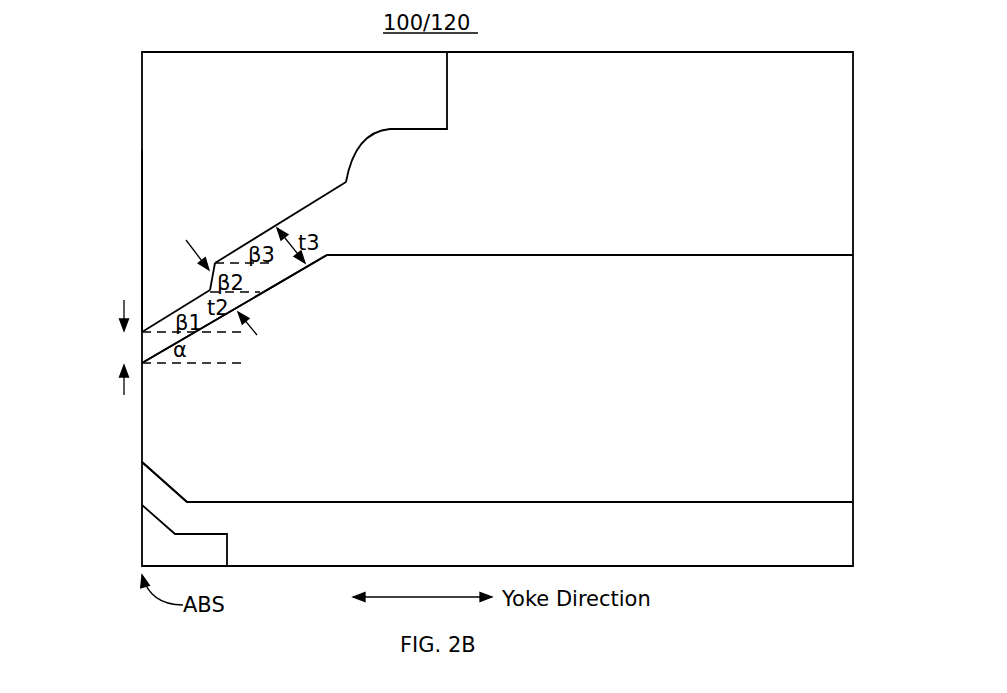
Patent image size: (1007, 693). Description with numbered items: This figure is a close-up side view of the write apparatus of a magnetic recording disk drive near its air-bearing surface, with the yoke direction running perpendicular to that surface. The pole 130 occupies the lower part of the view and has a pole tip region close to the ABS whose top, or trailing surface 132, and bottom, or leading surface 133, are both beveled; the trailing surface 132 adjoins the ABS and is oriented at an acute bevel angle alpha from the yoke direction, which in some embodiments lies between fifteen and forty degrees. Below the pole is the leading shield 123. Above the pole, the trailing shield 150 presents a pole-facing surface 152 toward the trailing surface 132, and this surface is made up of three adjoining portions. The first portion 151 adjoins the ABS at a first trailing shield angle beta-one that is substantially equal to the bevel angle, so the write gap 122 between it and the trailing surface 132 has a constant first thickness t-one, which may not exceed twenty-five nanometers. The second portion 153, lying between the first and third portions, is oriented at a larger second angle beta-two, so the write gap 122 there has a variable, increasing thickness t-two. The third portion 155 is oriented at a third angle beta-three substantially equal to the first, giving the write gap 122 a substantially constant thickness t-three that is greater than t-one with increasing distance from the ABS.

The trailing shield 150 is at (311, 117).
The third portion of the pole-facing surface 155 is at (259, 220).
The pole-facing surface 152 is at (195, 207).
The second portion of the pole-facing surface 153 is at (192, 268).
The first portion of the pole-facing surface 151 is at (175, 298).
The write gap 122 is at (103, 342).
The pole 130 is at (497, 378).
The trailing surface 132 is at (173, 372).
The leading surface 133 is at (163, 485).
The leading shield 123 is at (184, 535).